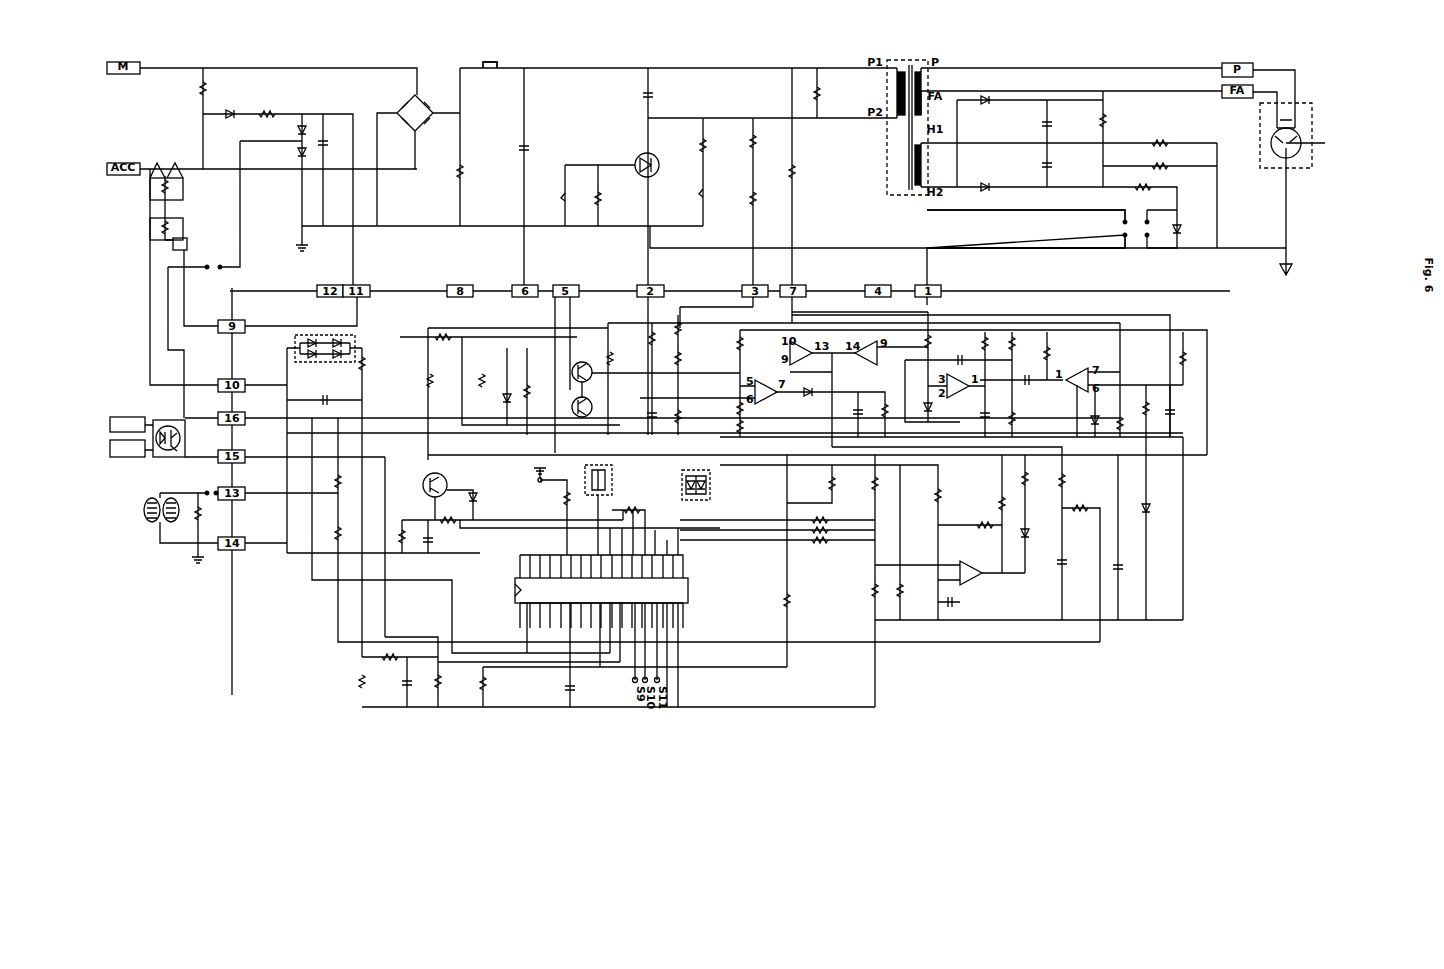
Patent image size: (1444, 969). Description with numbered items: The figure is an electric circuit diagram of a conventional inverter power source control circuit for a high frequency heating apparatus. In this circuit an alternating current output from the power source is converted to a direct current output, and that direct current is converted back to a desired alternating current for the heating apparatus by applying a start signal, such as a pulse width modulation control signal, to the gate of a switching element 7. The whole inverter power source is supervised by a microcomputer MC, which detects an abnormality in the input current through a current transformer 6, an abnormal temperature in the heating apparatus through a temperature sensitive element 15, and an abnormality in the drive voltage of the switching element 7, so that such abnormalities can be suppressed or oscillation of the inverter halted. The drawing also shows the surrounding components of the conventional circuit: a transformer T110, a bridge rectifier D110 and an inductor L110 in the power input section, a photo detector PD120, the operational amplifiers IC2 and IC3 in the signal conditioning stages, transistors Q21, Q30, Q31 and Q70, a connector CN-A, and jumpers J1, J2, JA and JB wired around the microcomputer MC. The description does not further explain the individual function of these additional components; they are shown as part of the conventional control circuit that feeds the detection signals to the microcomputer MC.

The current transformer 6 is at (152, 163).
The switching element 7 is at (659, 178).
The temperature sensitive element 15 is at (155, 534).
The microcomputer MC is at (703, 581).
The operational amplifier IC2 is at (1064, 385).
The operational amplifier IC3 is at (983, 582).
The transformer T110 is at (907, 118).
The connector CN-A is at (124, 428).
The jumper J1 is at (189, 484).
The jumper J2 is at (212, 275).
The jumper JA is at (632, 502).
The jumper JB is at (447, 512).
The bridge rectifier D110 is at (427, 103).
The inductor L110 is at (493, 57).
The photo detector PD120 is at (1027, 229).
The transistor Q70 is at (422, 485).
The transistor Q30 is at (587, 364).
The transistor Q31 is at (593, 402).
The transistor Q21 is at (1107, 411).